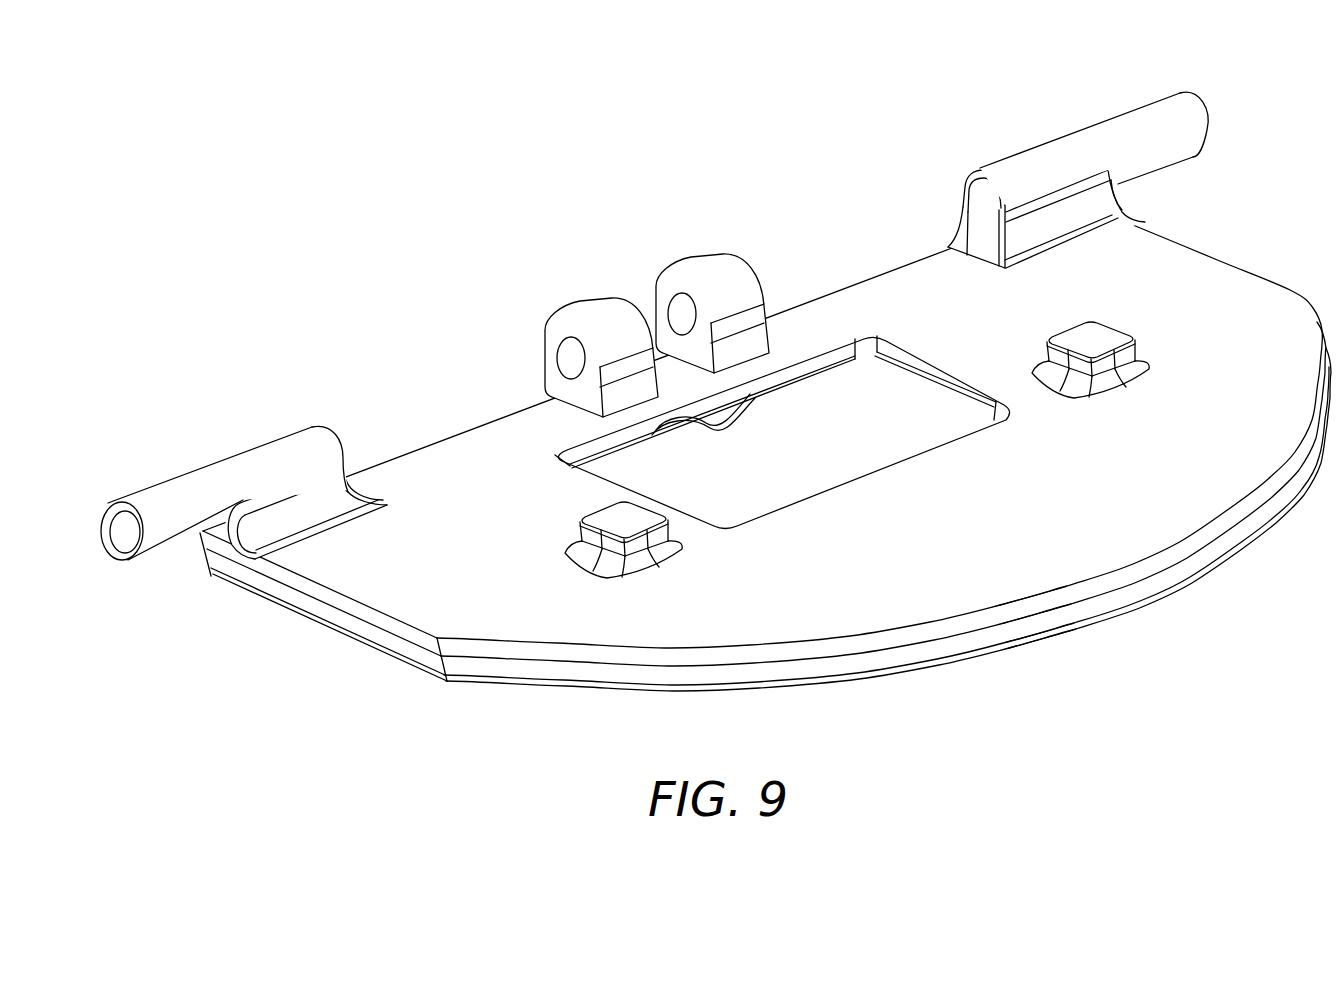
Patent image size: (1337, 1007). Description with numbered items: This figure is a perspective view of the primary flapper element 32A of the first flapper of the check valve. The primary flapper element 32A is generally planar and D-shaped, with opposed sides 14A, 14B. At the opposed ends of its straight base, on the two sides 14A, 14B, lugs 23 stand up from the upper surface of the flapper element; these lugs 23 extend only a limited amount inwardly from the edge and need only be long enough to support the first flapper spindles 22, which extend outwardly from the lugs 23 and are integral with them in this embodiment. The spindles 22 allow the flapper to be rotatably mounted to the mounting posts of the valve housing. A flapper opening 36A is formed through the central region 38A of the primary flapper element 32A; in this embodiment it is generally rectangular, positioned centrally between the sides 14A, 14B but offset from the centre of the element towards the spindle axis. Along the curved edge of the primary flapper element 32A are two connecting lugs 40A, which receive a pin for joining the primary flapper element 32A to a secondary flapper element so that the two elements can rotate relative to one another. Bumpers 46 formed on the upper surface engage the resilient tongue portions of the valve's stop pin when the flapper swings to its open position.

The primary flapper element 32A is at (716, 399).
The central region 38A is at (765, 485).
The side of first flapper 14A is at (1245, 312).
The side of first flapper 14B is at (400, 580).
The flapper opening 36A is at (860, 388).
The connecting lugs 40A is at (698, 272).
The bumpers 46 is at (637, 517).
The lugs 23 is at (277, 450).
The first flapper spindles 22 is at (168, 492).